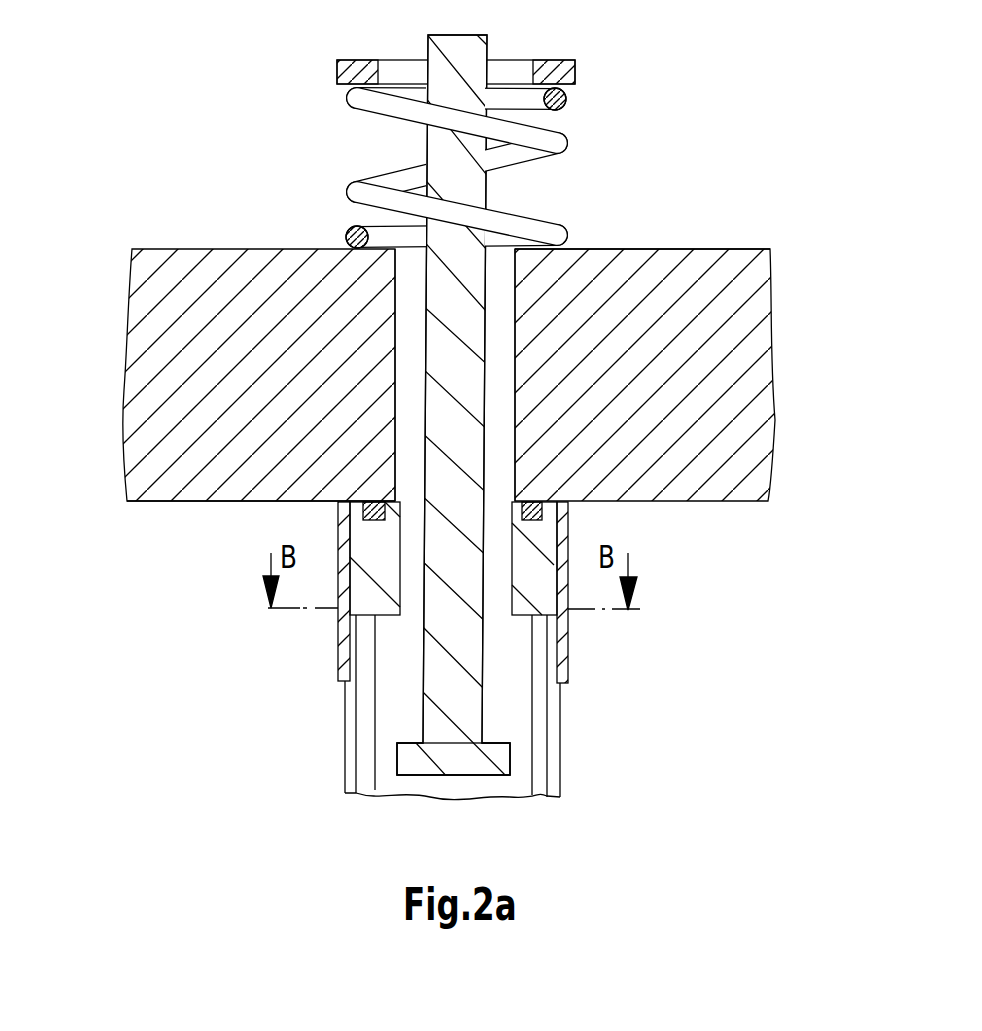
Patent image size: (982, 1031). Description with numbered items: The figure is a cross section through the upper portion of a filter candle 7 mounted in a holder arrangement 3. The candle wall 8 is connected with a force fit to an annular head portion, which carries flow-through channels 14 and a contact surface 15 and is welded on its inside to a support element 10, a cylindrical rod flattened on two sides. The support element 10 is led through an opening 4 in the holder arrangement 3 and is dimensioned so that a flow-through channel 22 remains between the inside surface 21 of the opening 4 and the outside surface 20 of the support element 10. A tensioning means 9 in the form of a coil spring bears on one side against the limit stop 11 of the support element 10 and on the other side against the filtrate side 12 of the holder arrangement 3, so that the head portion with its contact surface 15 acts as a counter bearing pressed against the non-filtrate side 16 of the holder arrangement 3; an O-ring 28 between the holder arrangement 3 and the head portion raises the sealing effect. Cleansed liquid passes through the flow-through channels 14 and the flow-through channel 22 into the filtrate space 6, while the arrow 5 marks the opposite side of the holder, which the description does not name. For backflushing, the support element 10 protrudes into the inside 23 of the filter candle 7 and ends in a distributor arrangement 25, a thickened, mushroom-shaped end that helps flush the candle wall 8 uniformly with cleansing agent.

The holder arrangement 3 is at (153, 358).
The opening 4 is at (410, 283).
The lower guide assembly 5 is at (214, 574).
The filtrate space 6 is at (582, 183).
The filter candle 7 is at (583, 721).
The candle wall 8 is at (550, 764).
The tensioning means 9 is at (523, 135).
The support element 10 is at (443, 357).
The limit stop 11 is at (337, 74).
The filtrate side 12 is at (633, 249).
The flow-through channels 14 is at (410, 607).
The contact surface 15 is at (552, 498).
The non-filtrate side 16 is at (193, 502).
The outside surface 20 is at (487, 364).
The inside surface 21 is at (515, 425).
The flow-through channel 22 is at (507, 495).
The inside 23 is at (492, 787).
The distributor arrangement 25 is at (428, 760).
The O-ring 28 is at (552, 504).